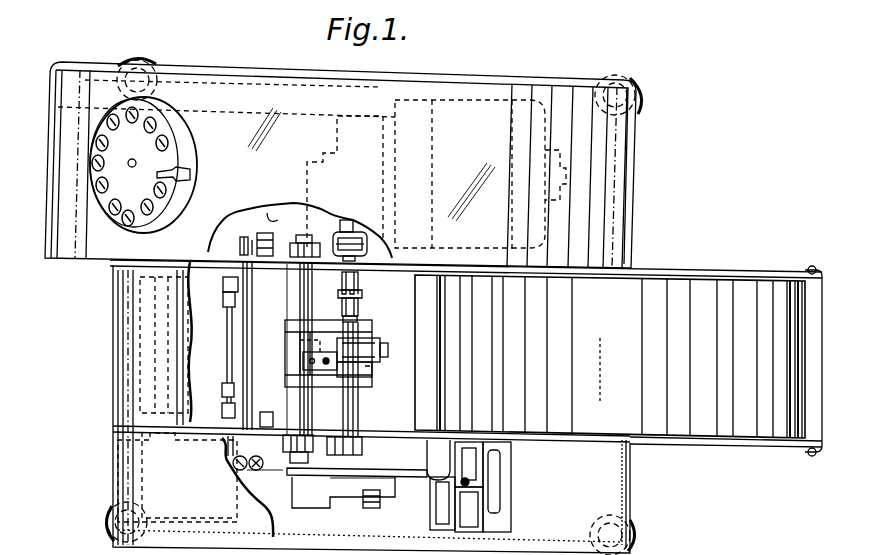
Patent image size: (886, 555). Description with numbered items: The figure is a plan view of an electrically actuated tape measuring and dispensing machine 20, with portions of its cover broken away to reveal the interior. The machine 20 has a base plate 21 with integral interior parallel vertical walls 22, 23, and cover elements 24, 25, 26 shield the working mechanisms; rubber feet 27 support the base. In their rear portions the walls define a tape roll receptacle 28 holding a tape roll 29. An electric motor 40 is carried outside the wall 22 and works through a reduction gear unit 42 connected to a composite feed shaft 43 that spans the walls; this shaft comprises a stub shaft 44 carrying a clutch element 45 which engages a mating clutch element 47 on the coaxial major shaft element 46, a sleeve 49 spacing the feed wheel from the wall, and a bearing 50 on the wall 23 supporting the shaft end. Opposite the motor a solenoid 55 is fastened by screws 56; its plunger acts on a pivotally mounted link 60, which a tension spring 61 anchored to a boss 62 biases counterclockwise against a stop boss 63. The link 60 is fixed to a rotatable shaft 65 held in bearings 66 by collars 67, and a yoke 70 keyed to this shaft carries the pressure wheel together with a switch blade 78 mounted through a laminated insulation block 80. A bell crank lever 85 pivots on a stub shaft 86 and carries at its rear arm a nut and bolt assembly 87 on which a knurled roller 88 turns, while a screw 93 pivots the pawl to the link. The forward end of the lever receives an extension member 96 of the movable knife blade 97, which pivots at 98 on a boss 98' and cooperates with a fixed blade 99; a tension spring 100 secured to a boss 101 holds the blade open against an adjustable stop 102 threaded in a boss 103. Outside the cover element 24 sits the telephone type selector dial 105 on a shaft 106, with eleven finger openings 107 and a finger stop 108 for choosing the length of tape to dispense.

The machine 20 is at (703, 133).
The base plate 21 is at (630, 492).
The vertical wall 22 is at (98, 262).
The vertical wall 23 is at (137, 427).
The cover element 24 is at (600, 207).
The cover element 25 is at (113, 356).
The cover element 26 is at (145, 489).
The rubber feet 27 is at (140, 60).
The tape roll receptacle 28 is at (702, 277).
The tape roll 29 is at (703, 420).
The electric motor 40 is at (487, 100).
The reduction gear unit 42 is at (320, 157).
The composite feed shaft 43 is at (360, 308).
The stub shaft 44 is at (355, 245).
The clutch element 45 is at (362, 288).
The major shaft element 46 is at (358, 320).
The clutch element 47 is at (362, 298).
The sleeve 49 is at (360, 410).
The bearing 50 is at (370, 467).
The solenoid 55 is at (512, 479).
The screws 56 is at (511, 450).
The link 60 is at (455, 515).
The tension spring 61 is at (469, 483).
The boss 62 is at (467, 450).
The stop boss 63 is at (455, 443).
The rotatable shaft 65 is at (300, 312).
The bearings 66 is at (298, 257).
The collars 67 is at (297, 257).
The yoke 70 is at (313, 332).
The switch blade 78 is at (372, 372).
The laminated insulation block 80 is at (310, 361).
The bell crank lever 85 is at (318, 468).
The stub shaft 86 is at (347, 437).
The nut and bolt assembly 87 is at (373, 506).
The roller 88 is at (413, 483).
The screw 93 is at (340, 487).
The extension member 96 is at (222, 397).
The knife blade 97 is at (243, 343).
The pivot 98 is at (300, 230).
The boss 98' is at (261, 220).
The fixed blade 99 is at (248, 287).
The tension spring 100 is at (250, 466).
The boss 101 is at (233, 452).
The adjustable stop 102 is at (285, 455).
The boss 103 is at (262, 413).
The selector dial 105 is at (167, 160).
The shaft 106 is at (135, 158).
The finger openings 107 is at (112, 115).
The finger stop 108 is at (190, 189).